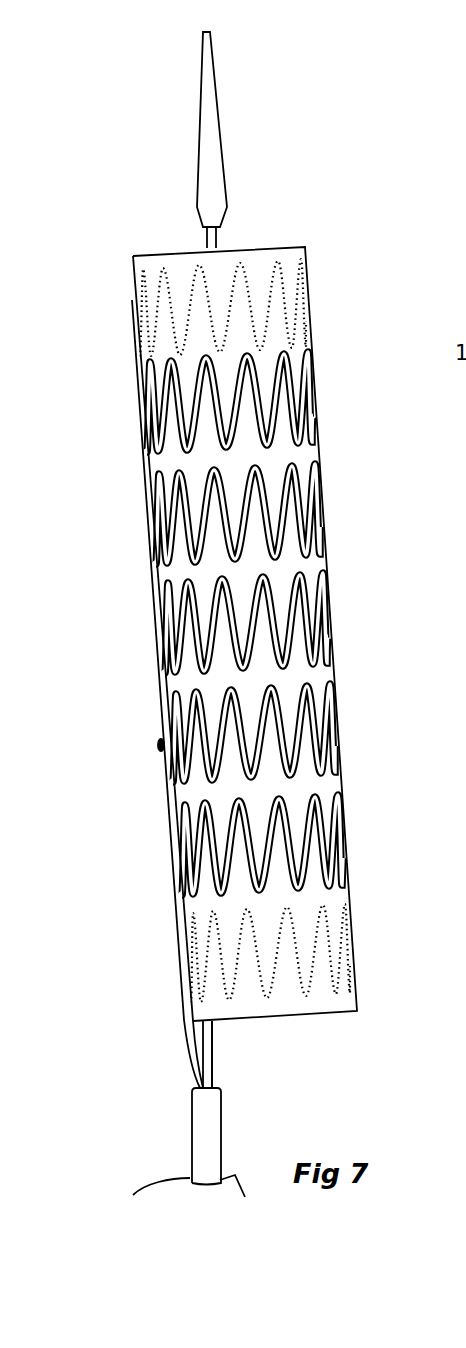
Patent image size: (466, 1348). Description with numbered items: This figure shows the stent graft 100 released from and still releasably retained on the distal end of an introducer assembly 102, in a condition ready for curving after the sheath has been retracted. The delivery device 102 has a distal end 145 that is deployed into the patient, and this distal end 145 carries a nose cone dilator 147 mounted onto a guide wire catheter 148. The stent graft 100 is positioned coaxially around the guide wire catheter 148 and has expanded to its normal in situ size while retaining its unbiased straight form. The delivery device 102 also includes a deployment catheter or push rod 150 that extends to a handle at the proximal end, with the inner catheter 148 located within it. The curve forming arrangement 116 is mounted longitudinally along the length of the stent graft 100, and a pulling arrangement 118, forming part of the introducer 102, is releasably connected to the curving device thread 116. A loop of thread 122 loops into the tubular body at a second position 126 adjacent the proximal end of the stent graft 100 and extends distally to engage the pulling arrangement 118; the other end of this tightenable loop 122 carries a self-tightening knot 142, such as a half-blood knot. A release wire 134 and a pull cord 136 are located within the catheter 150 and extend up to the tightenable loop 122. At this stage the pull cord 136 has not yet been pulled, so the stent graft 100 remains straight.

The stent graft 100 is at (300, 785).
The introducer assembly 102 is at (168, 1145).
The curving device thread 116 is at (108, 600).
The pulling arrangement 118 is at (146, 878).
The loop of thread 122 is at (130, 387).
The second position 126 is at (135, 283).
The release wire 134 is at (213, 1050).
The pull cord 136 is at (198, 1048).
The self-tightening knot 142 is at (148, 485).
The distal end 145 is at (245, 74).
The nose cone dilator 147 is at (217, 157).
The guide wire catheter 148 is at (217, 238).
The push rod 150 is at (207, 1128).